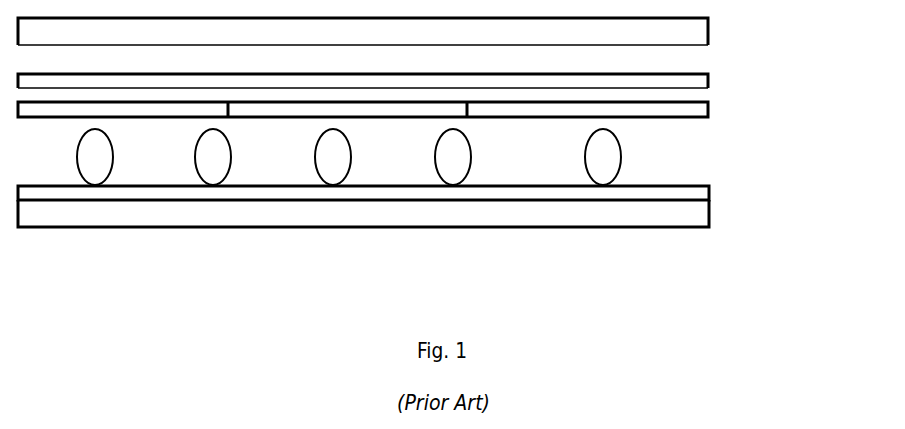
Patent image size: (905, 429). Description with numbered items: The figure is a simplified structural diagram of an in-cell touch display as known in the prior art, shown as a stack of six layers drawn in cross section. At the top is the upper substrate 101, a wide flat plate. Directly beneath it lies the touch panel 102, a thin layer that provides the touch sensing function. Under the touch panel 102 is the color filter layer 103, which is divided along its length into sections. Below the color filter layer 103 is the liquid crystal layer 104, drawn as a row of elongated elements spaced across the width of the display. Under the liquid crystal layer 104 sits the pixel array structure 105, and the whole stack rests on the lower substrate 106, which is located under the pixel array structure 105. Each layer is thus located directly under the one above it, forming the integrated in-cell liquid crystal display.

The upper substrate 101 is at (678, 33).
The touch panel 102 is at (678, 80).
The color filter layer 103 is at (678, 108).
The liquid crystal layer 104 is at (614, 155).
The pixel array structure 105 is at (678, 192).
The lower substrate 106 is at (678, 218).